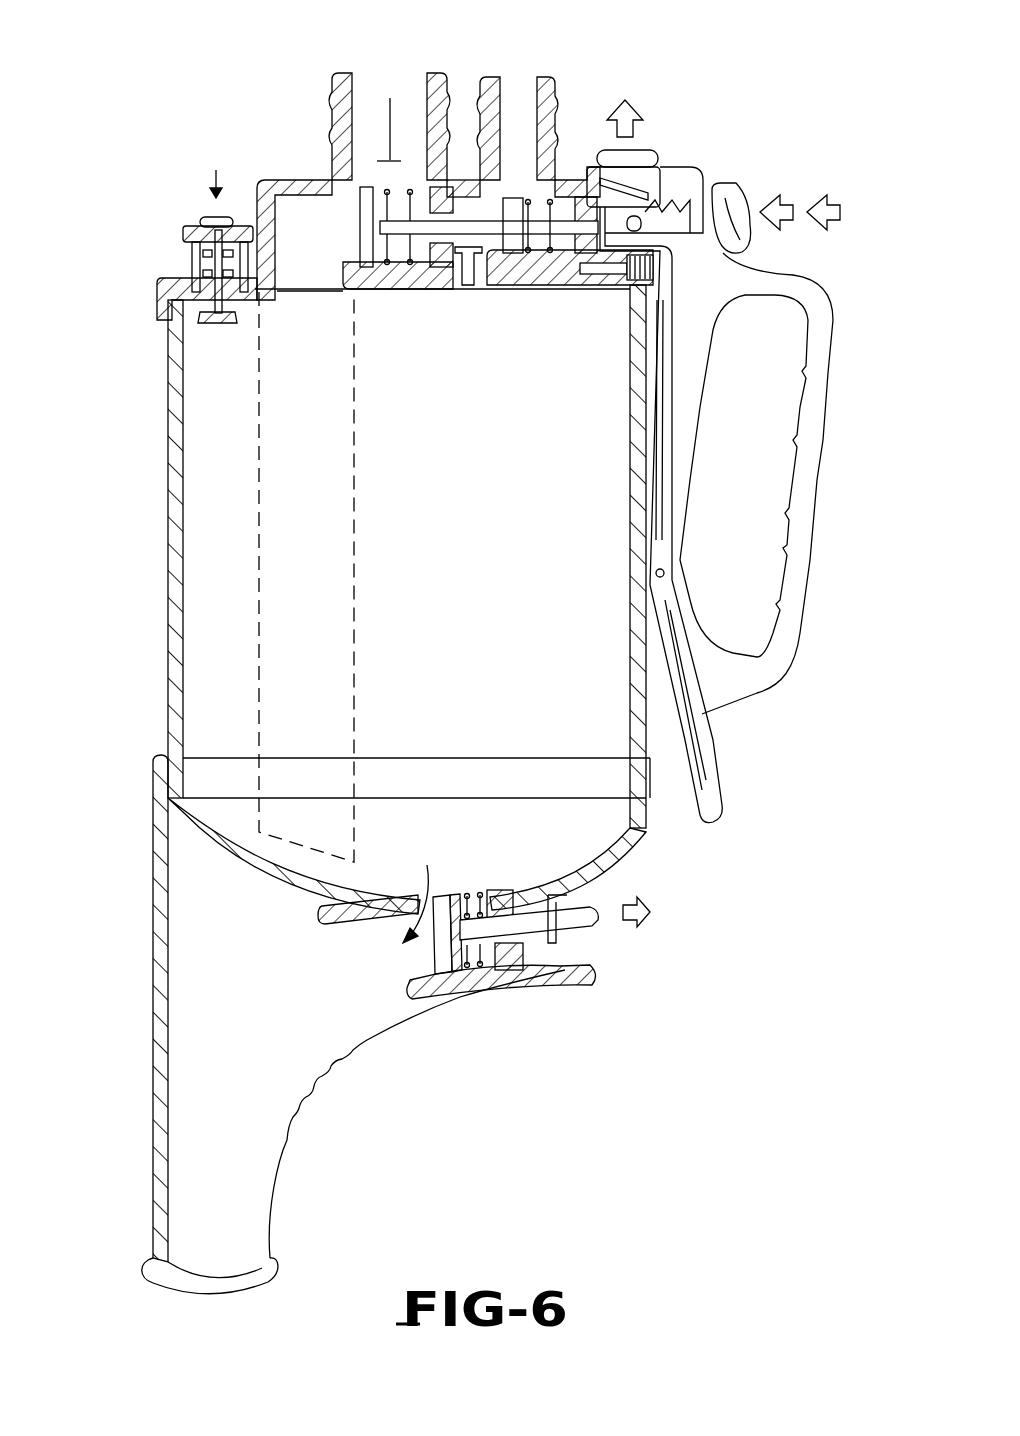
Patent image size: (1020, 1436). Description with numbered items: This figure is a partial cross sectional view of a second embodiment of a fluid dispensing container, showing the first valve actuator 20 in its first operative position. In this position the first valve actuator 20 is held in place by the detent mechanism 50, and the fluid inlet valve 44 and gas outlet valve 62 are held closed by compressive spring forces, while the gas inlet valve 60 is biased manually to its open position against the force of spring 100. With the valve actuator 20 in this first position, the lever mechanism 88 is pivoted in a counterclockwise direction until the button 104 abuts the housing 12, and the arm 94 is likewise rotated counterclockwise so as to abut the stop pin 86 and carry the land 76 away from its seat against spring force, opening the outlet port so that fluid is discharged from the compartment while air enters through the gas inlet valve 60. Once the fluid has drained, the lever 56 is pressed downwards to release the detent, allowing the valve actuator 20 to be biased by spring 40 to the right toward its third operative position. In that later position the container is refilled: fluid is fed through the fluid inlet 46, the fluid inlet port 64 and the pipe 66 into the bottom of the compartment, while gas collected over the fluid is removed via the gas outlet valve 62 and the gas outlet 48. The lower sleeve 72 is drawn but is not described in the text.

The housing 12 is at (168, 493).
The first valve actuator 20 is at (478, 245).
The spring 40 is at (627, 292).
The fluid inlet valve 44 is at (383, 272).
The fluid inlet 46 is at (383, 84).
The gas outlet 48 is at (518, 88).
The detent mechanism 50 is at (642, 102).
The lever 56 is at (658, 150).
The gas inlet valve 60 is at (207, 313).
The gas outlet valve 62 is at (541, 150).
The fluid inlet port 64 is at (306, 292).
The pipe 66 is at (355, 645).
The handle sleeve 72 is at (153, 1007).
The land 76 is at (435, 948).
The stop pin 86 is at (580, 927).
The lever mechanism 88 is at (722, 497).
The arm 94 is at (720, 812).
The spring 100 is at (195, 228).
The button 104 is at (740, 197).